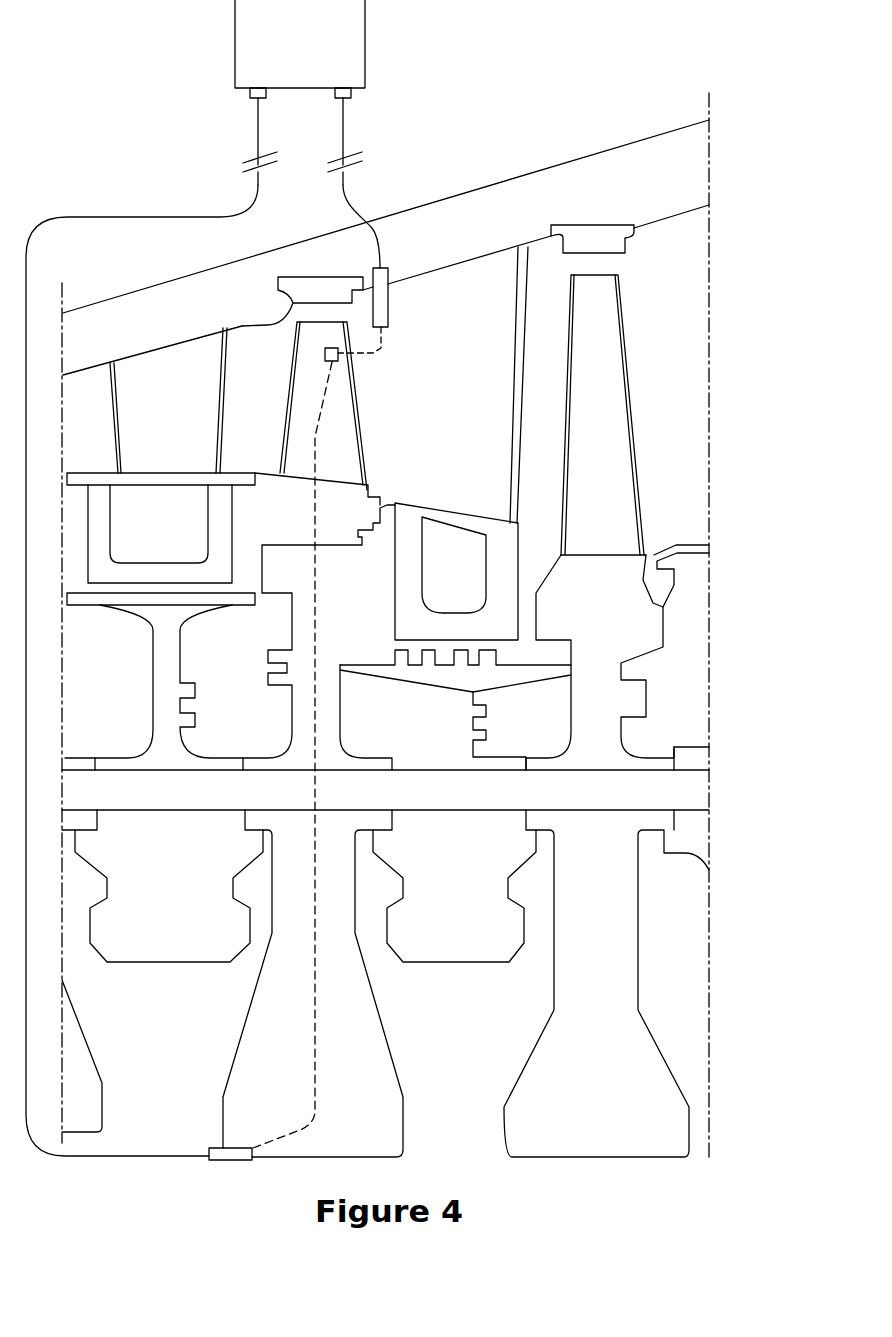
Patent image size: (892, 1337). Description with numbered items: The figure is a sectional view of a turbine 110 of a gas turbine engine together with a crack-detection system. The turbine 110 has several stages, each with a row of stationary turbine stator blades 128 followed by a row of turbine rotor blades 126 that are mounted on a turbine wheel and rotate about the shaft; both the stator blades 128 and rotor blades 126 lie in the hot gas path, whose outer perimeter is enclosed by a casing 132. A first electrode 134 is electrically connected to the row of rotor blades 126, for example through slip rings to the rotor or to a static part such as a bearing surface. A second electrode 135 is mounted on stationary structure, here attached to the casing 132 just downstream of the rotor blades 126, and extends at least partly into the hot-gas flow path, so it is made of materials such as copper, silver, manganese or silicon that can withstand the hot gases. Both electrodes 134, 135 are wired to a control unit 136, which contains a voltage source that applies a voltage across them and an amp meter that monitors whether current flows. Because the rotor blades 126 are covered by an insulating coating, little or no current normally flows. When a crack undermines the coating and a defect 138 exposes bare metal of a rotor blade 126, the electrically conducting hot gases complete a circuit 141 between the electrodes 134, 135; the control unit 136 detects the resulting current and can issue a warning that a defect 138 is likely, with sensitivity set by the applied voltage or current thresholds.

The turbine 110 is at (727, 106).
The turbine rotor blades 126 is at (342, 443).
The turbine stator blades 128 is at (194, 418).
The casing 132 is at (140, 343).
The first electrode 134 is at (224, 1160).
The second electrode 135 is at (388, 297).
The control unit 136 is at (355, 62).
The defect 138 is at (325, 355).
The circuit 141 is at (313, 1025).